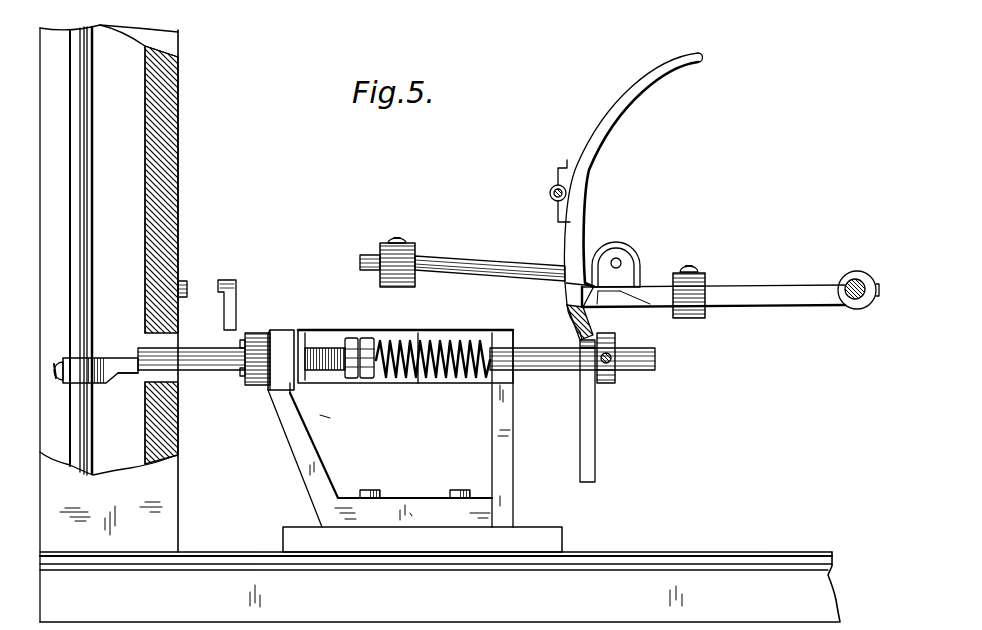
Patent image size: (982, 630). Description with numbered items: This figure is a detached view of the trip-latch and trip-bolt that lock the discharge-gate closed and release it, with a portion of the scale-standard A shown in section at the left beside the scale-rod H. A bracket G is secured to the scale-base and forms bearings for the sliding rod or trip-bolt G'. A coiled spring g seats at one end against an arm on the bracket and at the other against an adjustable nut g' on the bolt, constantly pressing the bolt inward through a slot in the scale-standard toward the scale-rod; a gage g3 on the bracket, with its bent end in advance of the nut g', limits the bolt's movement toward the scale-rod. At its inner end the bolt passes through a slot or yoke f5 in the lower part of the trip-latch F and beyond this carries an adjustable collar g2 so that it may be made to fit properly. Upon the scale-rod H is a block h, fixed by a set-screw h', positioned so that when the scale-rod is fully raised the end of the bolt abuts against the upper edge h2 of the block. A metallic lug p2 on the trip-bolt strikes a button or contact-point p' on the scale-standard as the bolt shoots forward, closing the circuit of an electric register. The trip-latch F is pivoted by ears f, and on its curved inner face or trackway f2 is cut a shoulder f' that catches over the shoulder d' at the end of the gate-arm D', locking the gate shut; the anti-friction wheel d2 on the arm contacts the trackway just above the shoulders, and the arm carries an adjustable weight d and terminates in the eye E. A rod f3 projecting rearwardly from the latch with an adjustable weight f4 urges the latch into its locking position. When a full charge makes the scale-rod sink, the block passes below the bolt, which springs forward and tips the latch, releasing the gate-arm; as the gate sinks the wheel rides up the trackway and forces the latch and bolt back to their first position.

The scale-rod H is at (109, 323).
The frame / bed A is at (207, 242).
The sliding rod or trip-bolt G' is at (396, 371).
The bracket G is at (401, 441).
The block h is at (100, 371).
The set-screw h' is at (53, 358).
The upper edge of block h2 is at (138, 358).
The button or contact-point p' is at (190, 283).
The metallic lug p2 is at (239, 299).
The gage g3 is at (330, 340).
The adjustable nut g' is at (359, 340).
The coiled spring g is at (433, 343).
The adjustable collar g2 is at (614, 336).
The adjustable weight f4 is at (394, 269).
The arm or rod f3 is at (490, 256).
The curved inner face or trackway f2 is at (633, 179).
The ears f is at (548, 191).
The shoulder f' is at (580, 276).
The slot or yoke f5 is at (596, 400).
The trip-latch F is at (567, 300).
The anti-friction wheel d2 is at (630, 258).
The shoulder d' is at (615, 297).
The arm / link D' is at (713, 296).
The adjustable weight d is at (698, 300).
The pivot eye E is at (850, 285).